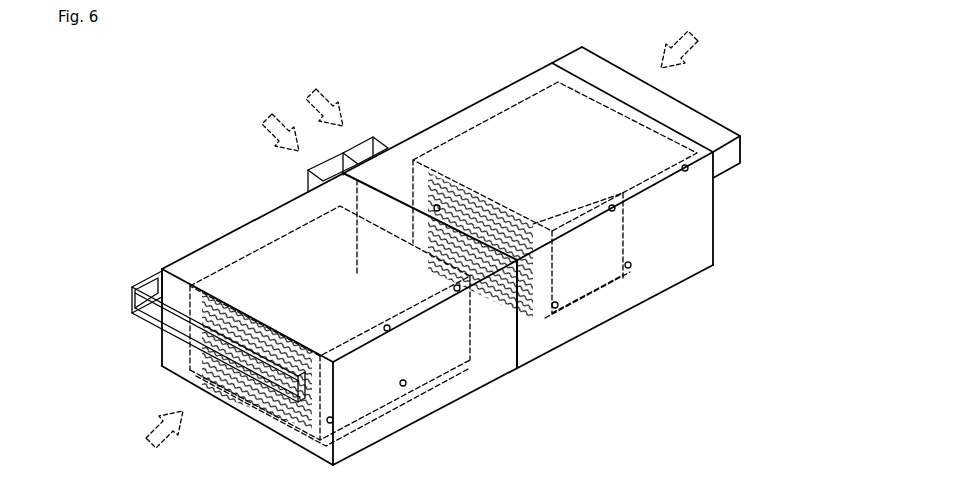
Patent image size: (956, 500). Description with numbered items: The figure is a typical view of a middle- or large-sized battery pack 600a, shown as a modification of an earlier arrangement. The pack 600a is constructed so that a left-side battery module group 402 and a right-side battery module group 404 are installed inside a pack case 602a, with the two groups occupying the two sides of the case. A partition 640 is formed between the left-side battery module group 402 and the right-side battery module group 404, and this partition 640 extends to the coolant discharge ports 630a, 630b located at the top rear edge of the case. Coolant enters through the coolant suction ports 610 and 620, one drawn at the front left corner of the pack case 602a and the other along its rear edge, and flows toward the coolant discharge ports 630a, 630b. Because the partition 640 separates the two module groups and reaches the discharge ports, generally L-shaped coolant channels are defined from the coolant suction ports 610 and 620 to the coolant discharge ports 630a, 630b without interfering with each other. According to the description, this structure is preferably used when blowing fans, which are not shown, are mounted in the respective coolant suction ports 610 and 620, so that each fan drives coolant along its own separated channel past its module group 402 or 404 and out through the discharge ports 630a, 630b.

The middle- or large-sized battery pack 600a is at (182, 83).
The pack case 602a is at (698, 277).
The coolant suction port 610 is at (153, 322).
The coolant suction port 620 is at (655, 112).
The coolant discharge port 630a is at (282, 174).
The coolant discharge port 630b is at (386, 119).
The partition 640 is at (502, 322).
The left-side battery module group 402 is at (363, 378).
The right-side battery module group 404 is at (593, 283).